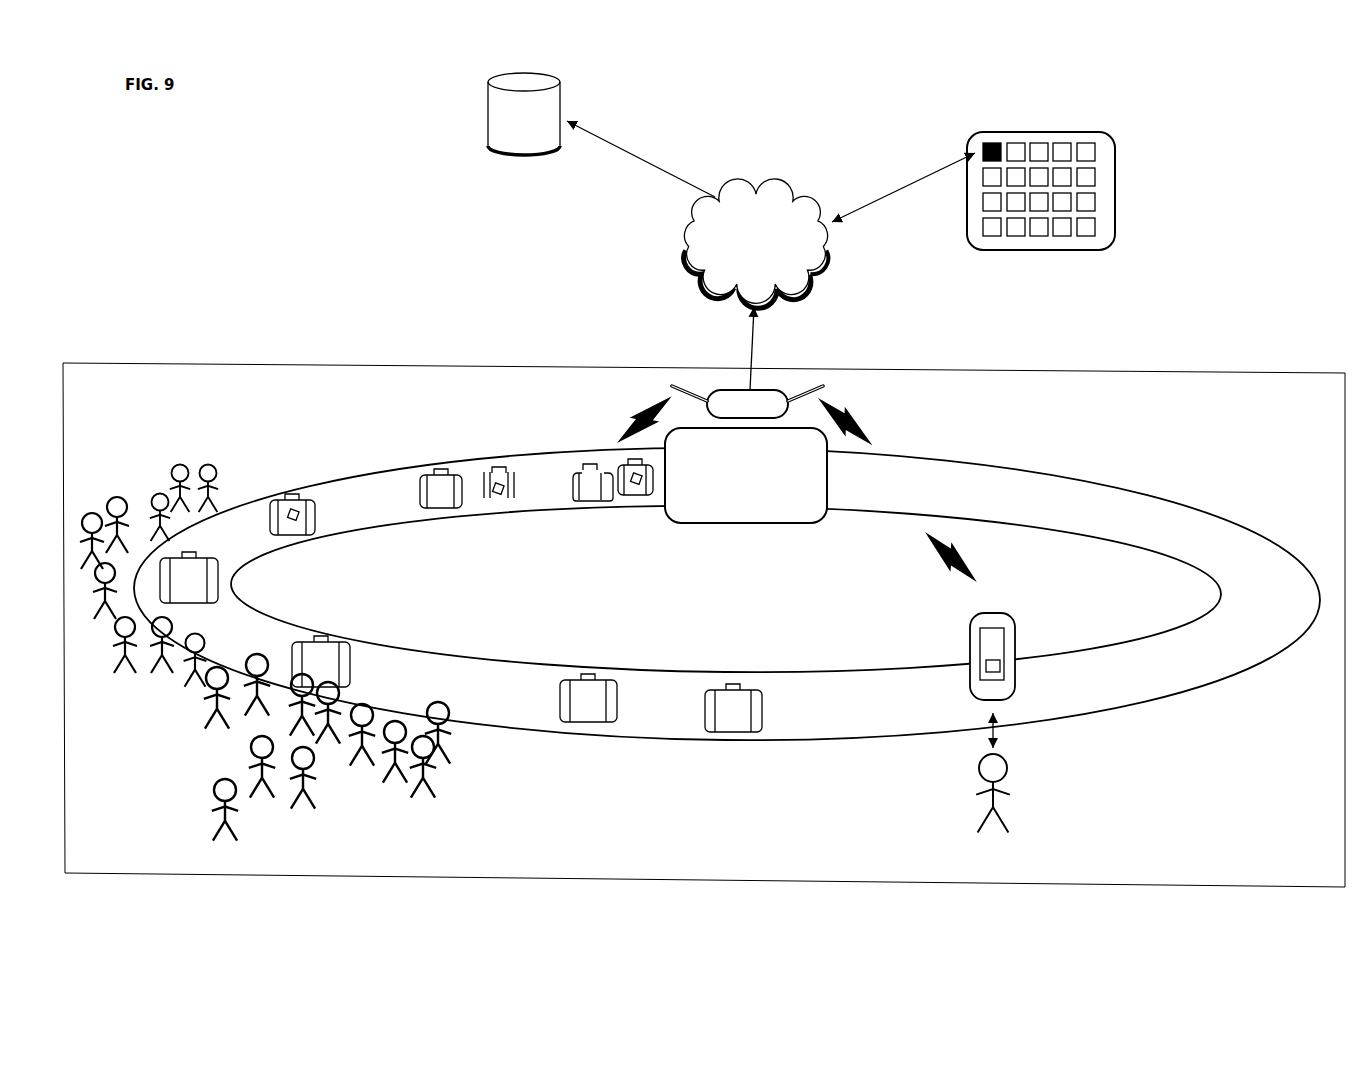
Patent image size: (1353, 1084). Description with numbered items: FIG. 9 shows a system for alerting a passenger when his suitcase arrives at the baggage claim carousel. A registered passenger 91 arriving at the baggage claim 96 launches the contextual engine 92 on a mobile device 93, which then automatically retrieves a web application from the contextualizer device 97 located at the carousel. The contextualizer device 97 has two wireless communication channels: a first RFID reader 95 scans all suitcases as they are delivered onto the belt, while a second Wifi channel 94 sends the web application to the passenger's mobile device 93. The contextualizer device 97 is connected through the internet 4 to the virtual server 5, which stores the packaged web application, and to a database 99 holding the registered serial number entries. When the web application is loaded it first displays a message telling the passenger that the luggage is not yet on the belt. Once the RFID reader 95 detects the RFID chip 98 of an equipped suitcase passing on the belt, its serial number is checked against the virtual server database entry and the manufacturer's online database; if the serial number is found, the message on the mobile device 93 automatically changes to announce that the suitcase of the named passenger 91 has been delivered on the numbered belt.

The internet 4 is at (756, 243).
The virtual server 5 is at (1047, 183).
The database 99 is at (524, 114).
The contextualizer device 97 is at (747, 362).
The baggage claim 96 is at (746, 475).
The RFID reader 95 is at (643, 419).
The wireless signal 94 is at (849, 422).
The baggage tag 98 is at (632, 493).
The mobile device 93 is at (992, 647).
The contextual engine 92 is at (1001, 665).
The passenger 91 is at (993, 805).